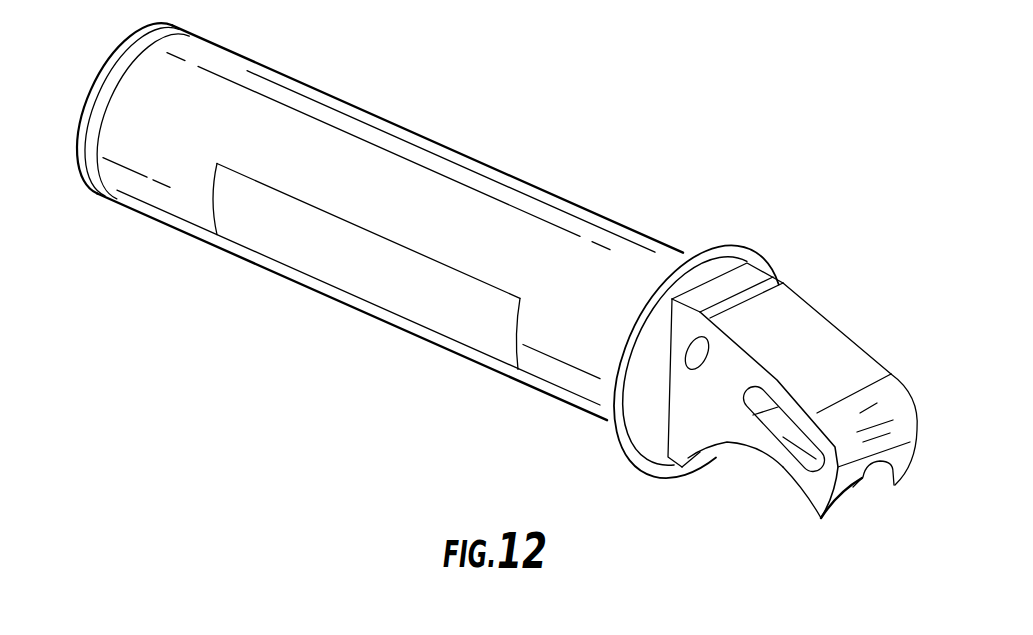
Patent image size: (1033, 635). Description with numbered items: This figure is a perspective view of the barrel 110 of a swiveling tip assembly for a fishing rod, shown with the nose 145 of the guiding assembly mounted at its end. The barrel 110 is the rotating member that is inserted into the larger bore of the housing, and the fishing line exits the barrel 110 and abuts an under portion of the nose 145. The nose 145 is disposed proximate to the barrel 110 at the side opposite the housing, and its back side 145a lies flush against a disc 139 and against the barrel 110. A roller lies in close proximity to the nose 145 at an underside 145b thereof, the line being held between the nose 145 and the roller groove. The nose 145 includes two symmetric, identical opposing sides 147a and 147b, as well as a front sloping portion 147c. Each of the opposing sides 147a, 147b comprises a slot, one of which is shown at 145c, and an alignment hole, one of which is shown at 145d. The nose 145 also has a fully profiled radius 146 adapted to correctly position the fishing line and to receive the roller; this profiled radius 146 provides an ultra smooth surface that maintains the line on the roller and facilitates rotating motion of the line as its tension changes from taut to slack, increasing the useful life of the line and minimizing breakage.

The barrel 110 is at (483, 163).
The disc 139 is at (713, 247).
The nose 145 is at (800, 337).
The back side 145a is at (667, 421).
The underside 145b is at (807, 500).
The slot 145c is at (783, 435).
The alignment hole 145d is at (682, 348).
The profiled radius 146 is at (870, 472).
The first side 147a is at (687, 425).
The second side 147b is at (867, 347).
The front sloping portion 147c is at (893, 400).